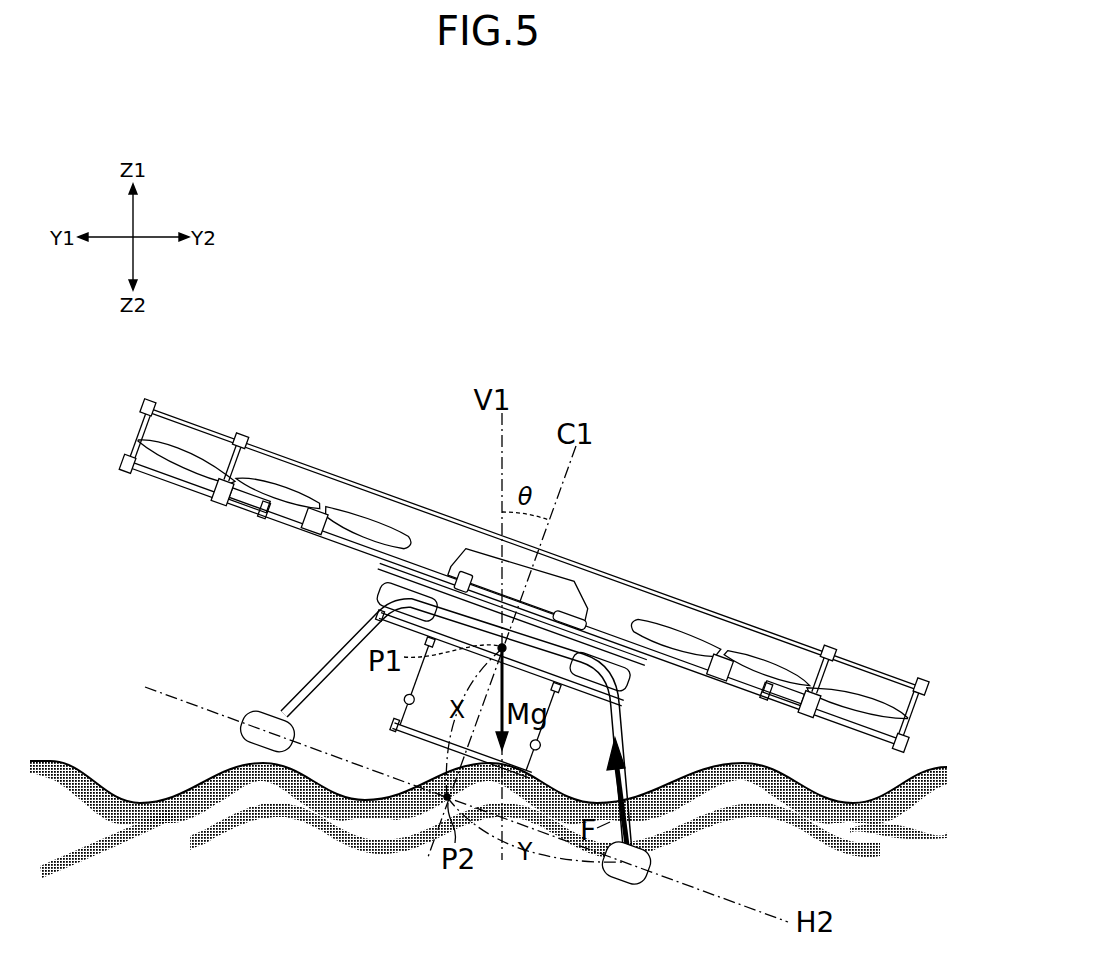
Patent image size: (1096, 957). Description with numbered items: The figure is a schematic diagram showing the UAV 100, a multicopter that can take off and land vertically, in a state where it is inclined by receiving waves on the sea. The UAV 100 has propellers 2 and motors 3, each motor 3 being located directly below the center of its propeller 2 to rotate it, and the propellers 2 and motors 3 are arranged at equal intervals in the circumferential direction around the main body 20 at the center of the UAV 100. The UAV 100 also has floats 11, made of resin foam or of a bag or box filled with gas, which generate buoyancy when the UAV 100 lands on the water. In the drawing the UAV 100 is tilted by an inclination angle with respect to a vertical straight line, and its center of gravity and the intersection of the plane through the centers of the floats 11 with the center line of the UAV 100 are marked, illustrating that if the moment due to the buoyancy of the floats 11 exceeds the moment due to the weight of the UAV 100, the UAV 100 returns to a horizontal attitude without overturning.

The propeller 2 is at (194, 457).
The motor 3 is at (212, 498).
The main body 20 is at (466, 568).
The UAV 100 is at (702, 428).
The float 11 is at (262, 720).